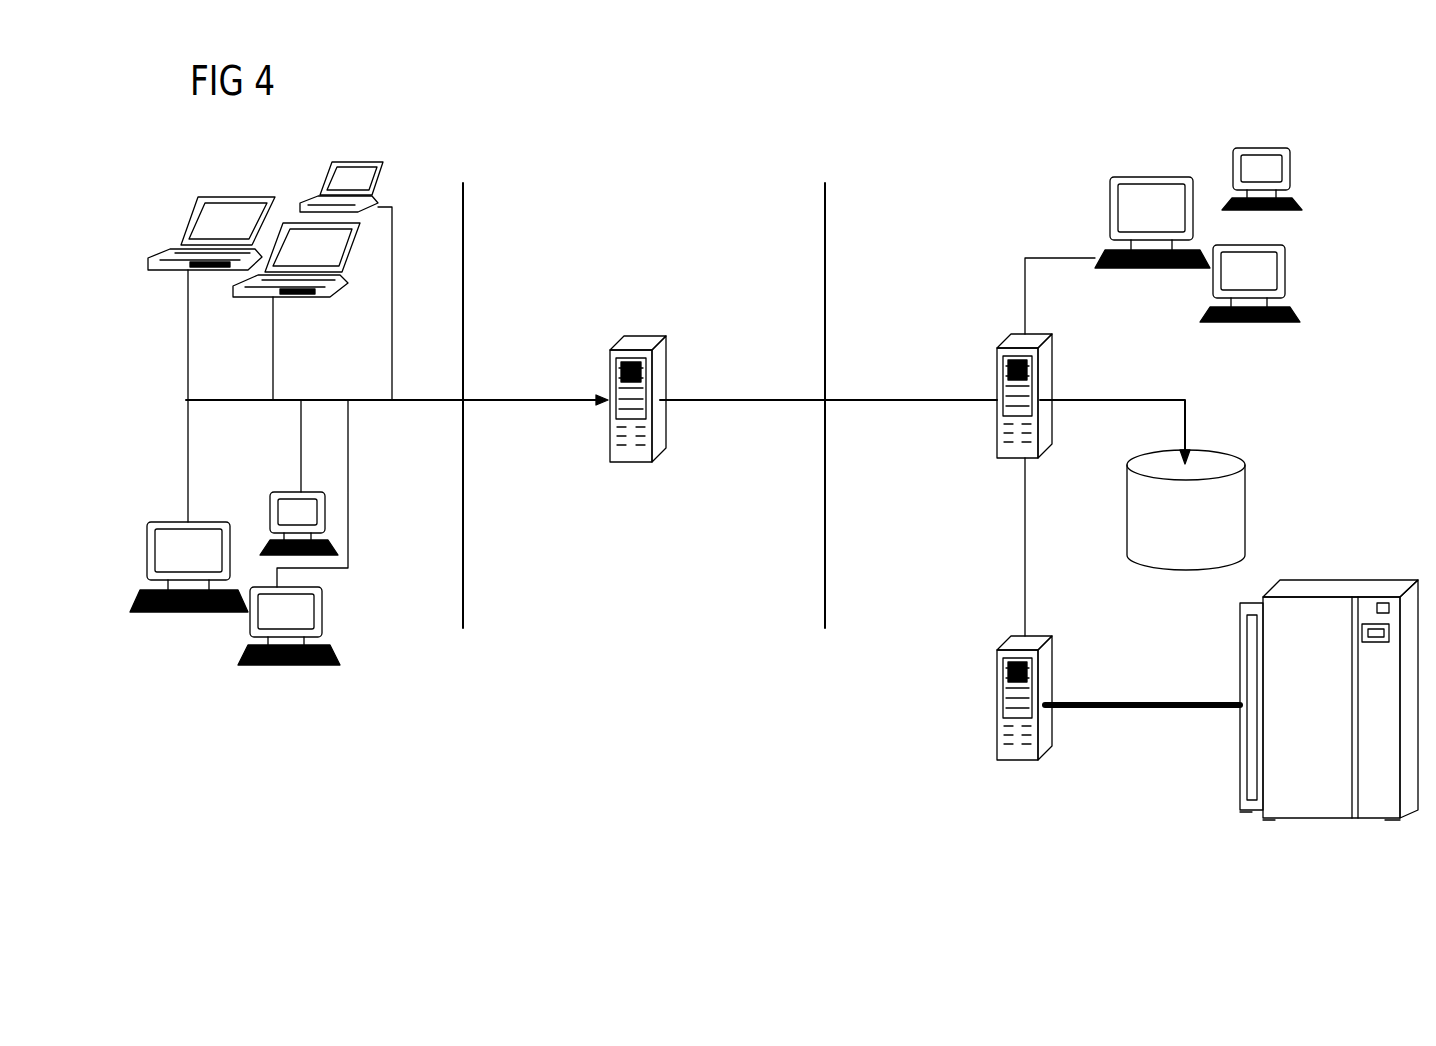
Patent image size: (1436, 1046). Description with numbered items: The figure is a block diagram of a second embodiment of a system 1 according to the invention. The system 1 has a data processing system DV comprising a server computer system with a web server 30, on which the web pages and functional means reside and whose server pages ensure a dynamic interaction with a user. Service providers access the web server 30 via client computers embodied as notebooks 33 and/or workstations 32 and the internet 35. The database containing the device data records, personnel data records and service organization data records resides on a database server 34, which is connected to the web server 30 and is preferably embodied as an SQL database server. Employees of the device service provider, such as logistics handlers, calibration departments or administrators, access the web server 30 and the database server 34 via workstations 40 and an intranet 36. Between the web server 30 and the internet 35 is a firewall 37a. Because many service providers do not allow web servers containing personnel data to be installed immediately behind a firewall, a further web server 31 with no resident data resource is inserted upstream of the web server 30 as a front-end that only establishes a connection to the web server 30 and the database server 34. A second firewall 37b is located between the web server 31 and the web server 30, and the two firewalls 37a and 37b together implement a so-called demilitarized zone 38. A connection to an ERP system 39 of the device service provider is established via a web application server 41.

The system 1 is at (528, 626).
The web server 30 is at (997, 362).
The web server with no resident data resource 31 is at (668, 370).
The workstations 32 is at (324, 620).
The notebooks 33 is at (182, 226).
The database server 34 is at (1246, 500).
The internet 35 is at (370, 444).
The intranet 36 is at (983, 228).
The firewall 37a is at (465, 268).
The second firewall 37b is at (823, 267).
The demilitarized zone 38 is at (692, 206).
The ERP system 39 is at (1240, 760).
The workstations 40 is at (1110, 199).
The web application server 41 is at (997, 693).
The data processing system DV is at (807, 654).